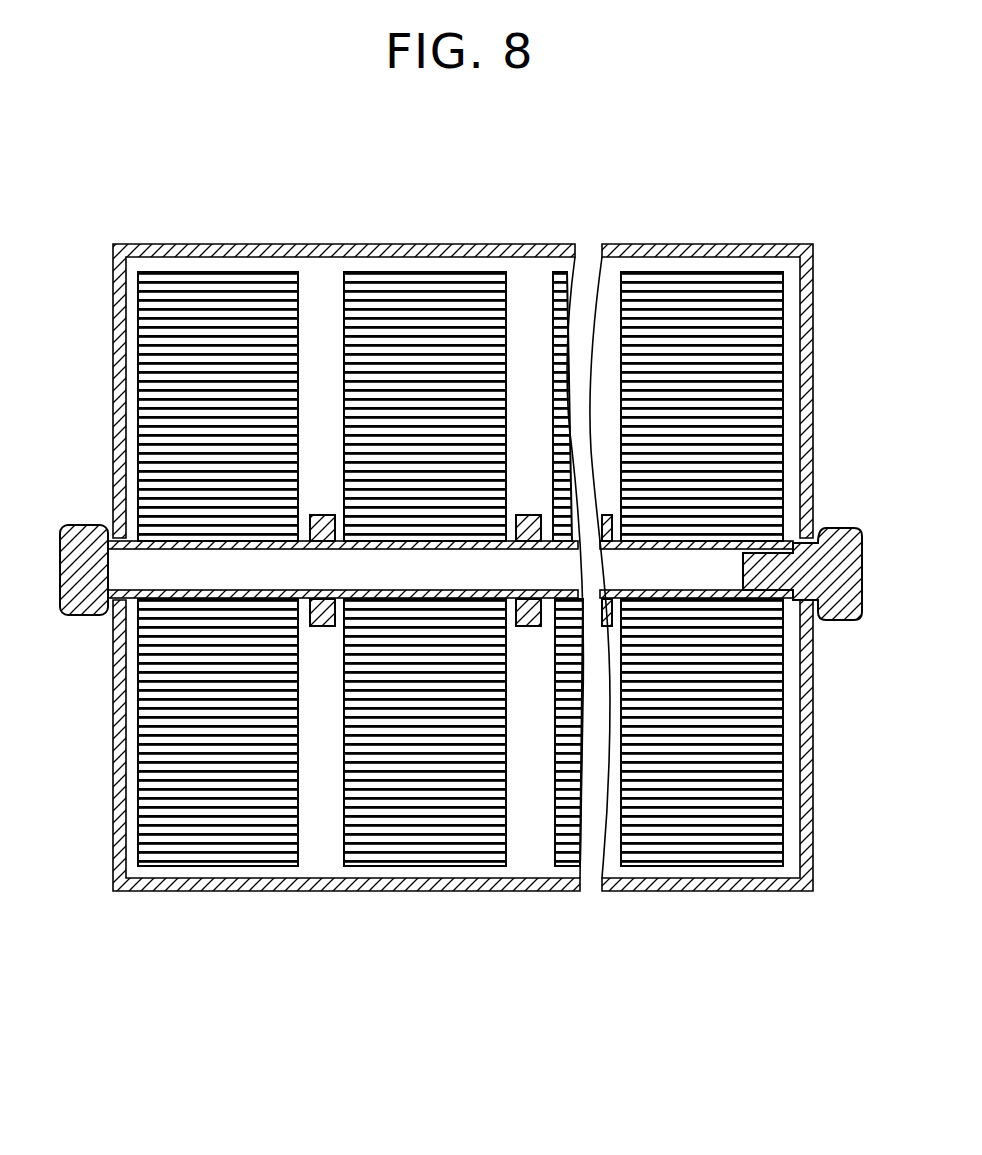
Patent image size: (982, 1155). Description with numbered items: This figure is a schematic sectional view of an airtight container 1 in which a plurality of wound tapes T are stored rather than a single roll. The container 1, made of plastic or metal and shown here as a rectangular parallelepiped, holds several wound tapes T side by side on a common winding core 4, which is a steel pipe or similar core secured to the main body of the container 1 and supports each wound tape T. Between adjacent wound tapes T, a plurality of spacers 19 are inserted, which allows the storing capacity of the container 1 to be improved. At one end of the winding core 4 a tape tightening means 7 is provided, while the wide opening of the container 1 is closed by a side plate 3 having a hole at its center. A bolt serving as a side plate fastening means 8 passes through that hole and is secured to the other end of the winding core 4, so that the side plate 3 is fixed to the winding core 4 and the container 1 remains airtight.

The airtight container 1 is at (135, 244).
The side plate 3 is at (812, 305).
The wound tape T is at (685, 293).
The winding core 4 is at (265, 598).
The tape tightening means 7 is at (85, 535).
The side plate fastening means 8 is at (842, 620).
The spacers 19 is at (528, 627).